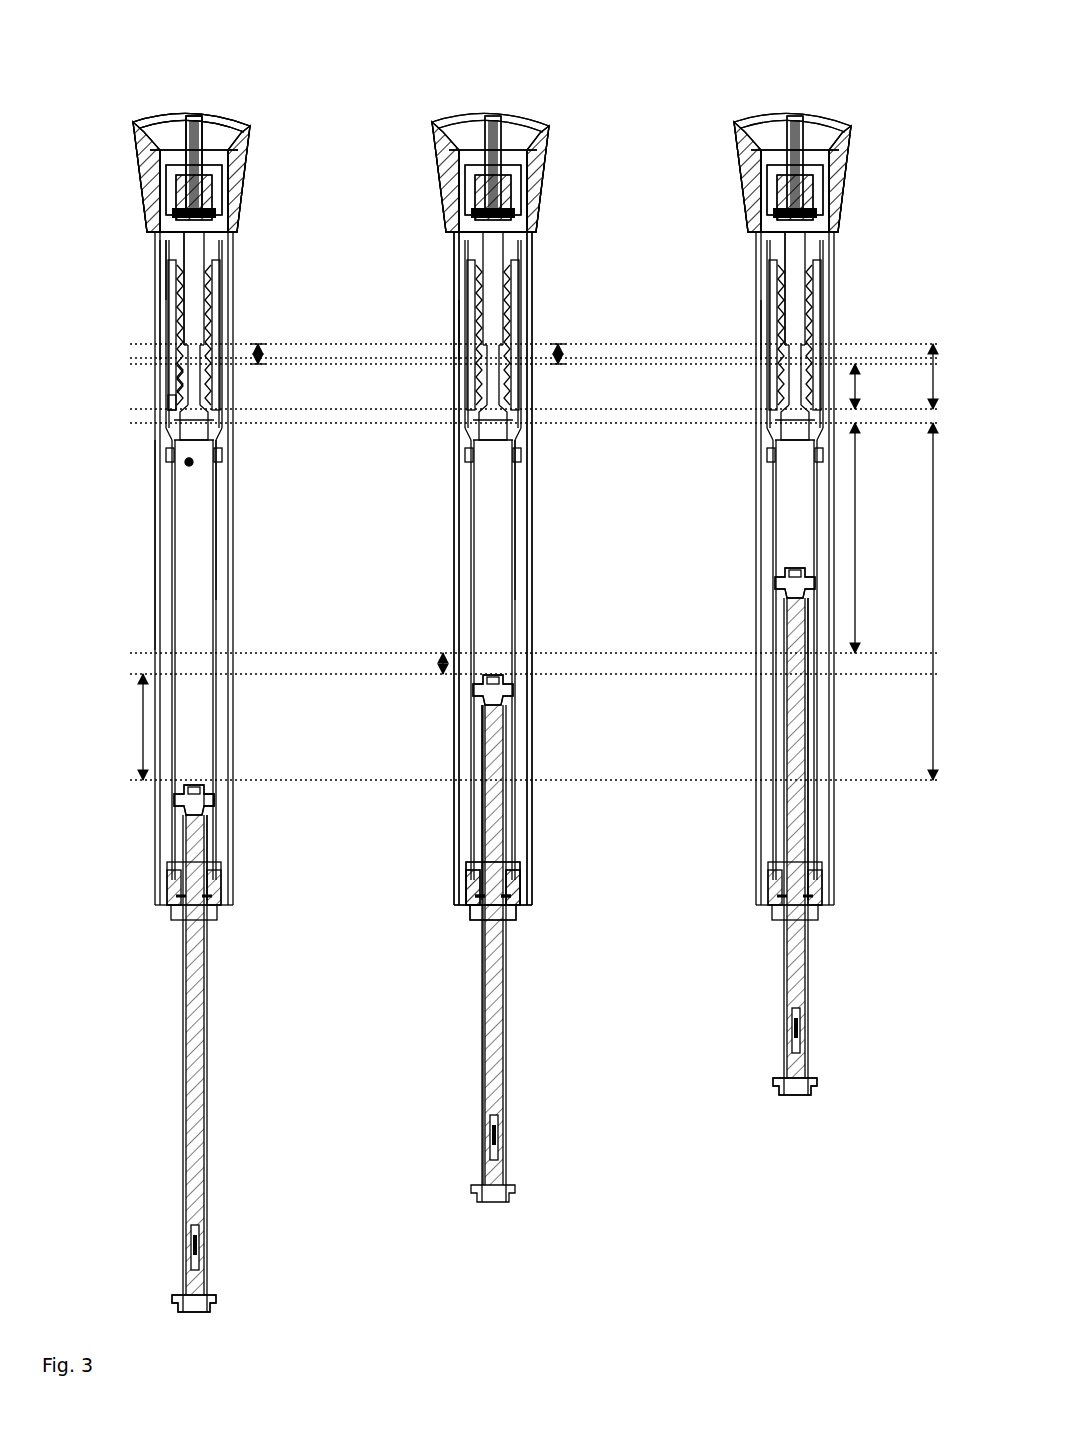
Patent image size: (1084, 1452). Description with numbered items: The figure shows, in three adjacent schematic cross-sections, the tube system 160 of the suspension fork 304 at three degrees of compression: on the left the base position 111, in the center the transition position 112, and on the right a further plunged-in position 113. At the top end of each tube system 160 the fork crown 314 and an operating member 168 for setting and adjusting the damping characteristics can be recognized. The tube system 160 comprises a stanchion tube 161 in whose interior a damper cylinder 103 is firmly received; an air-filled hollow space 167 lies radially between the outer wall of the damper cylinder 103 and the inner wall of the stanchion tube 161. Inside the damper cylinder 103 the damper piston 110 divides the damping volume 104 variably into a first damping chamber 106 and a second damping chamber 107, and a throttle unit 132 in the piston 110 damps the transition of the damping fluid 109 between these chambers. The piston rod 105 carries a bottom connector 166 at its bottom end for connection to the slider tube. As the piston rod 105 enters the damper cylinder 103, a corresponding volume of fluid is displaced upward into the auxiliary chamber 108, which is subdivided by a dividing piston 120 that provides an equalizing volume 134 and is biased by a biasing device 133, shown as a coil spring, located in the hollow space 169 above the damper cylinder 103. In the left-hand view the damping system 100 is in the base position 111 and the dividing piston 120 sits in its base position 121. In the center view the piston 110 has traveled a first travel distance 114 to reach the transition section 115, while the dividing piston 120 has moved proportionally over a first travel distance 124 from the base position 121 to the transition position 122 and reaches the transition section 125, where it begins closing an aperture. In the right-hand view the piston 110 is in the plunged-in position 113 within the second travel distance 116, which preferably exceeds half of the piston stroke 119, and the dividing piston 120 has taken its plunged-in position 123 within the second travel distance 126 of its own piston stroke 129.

The damping system 100 is at (724, 221).
The damper cylinder 103 is at (170, 546).
The damping volume 104 is at (497, 661).
The piston rod 105 is at (183, 1060).
The first damping chamber 106 is at (200, 612).
The second damping chamber 107 is at (208, 840).
The auxiliary chamber 108 is at (214, 248).
The damping fluid 109 is at (185, 462).
The damper piston 110 is at (143, 794).
The base position 111 is at (201, 90).
The transition position 112 is at (489, 90).
The plunged-in position 113 is at (803, 90).
The first travel distance 114 is at (138, 733).
The transition section 115 is at (440, 664).
The second travel distance 116 is at (862, 578).
The piston stroke 119 is at (928, 724).
The dividing piston 120 is at (140, 276).
The base position 121 is at (158, 343).
The transition position 122 is at (456, 353).
The plunged-in position 123 is at (758, 360).
The first travel distance 124 is at (260, 355).
The transition section 125 is at (560, 356).
The second travel distance 126 is at (862, 383).
The piston stroke 129 is at (935, 378).
The throttle unit 132 is at (216, 803).
The biasing device 133 is at (178, 388).
The equalizing volume 134 is at (172, 250).
The tube system 160 is at (270, 143).
The stanchion tube 161 is at (160, 590).
The bottom connector 166 is at (178, 1298).
The hollow space 167 is at (222, 540).
The operating member 168 is at (200, 118).
The hollow space 169 is at (172, 402).
The suspension fork 304 is at (134, 93).
The fork crown 314 is at (137, 122).